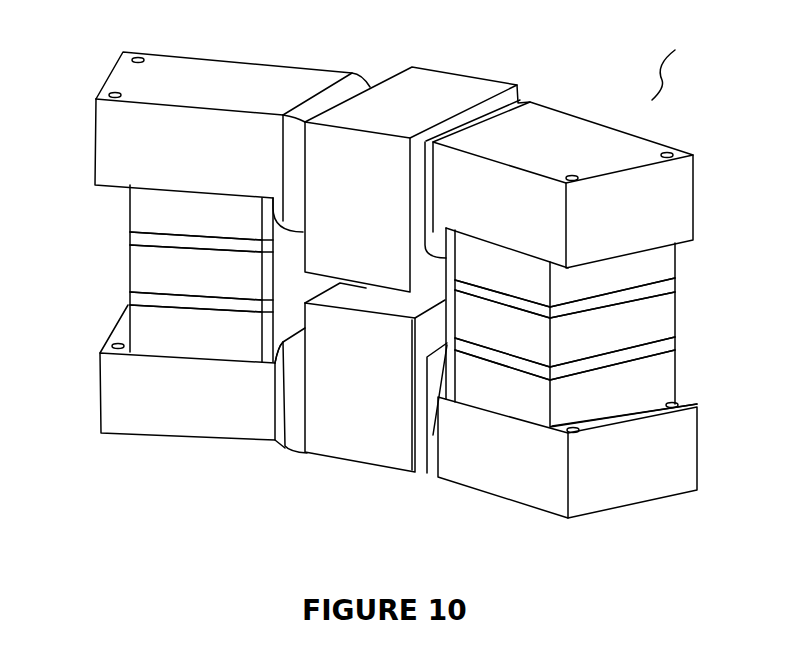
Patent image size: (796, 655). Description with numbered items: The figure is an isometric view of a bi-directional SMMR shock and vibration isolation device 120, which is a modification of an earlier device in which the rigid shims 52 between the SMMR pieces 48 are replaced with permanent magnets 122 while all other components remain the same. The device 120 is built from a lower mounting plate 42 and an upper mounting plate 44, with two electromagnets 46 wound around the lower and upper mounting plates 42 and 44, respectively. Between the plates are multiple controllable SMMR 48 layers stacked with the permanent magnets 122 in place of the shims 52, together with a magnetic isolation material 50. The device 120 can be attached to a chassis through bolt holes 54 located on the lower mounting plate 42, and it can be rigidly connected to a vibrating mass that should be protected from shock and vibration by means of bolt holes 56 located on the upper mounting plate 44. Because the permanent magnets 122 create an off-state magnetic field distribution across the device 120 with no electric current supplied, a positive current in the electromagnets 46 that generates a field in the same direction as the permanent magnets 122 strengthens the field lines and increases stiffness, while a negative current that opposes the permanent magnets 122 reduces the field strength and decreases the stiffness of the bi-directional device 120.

The lower mounting plate 42 is at (497, 470).
The upper mounting plate 44 is at (660, 230).
The electromagnet 46 is at (423, 93).
The controllable SMMR 48 is at (143, 210).
The magnetic isolation material 50 is at (268, 348).
The rigid shim 52 is at (137, 240).
The bolt hole 54 is at (100, 353).
The bolt hole 56 is at (110, 95).
The SMMR device 120 is at (685, 66).
The permanent magnet 122 is at (136, 300).